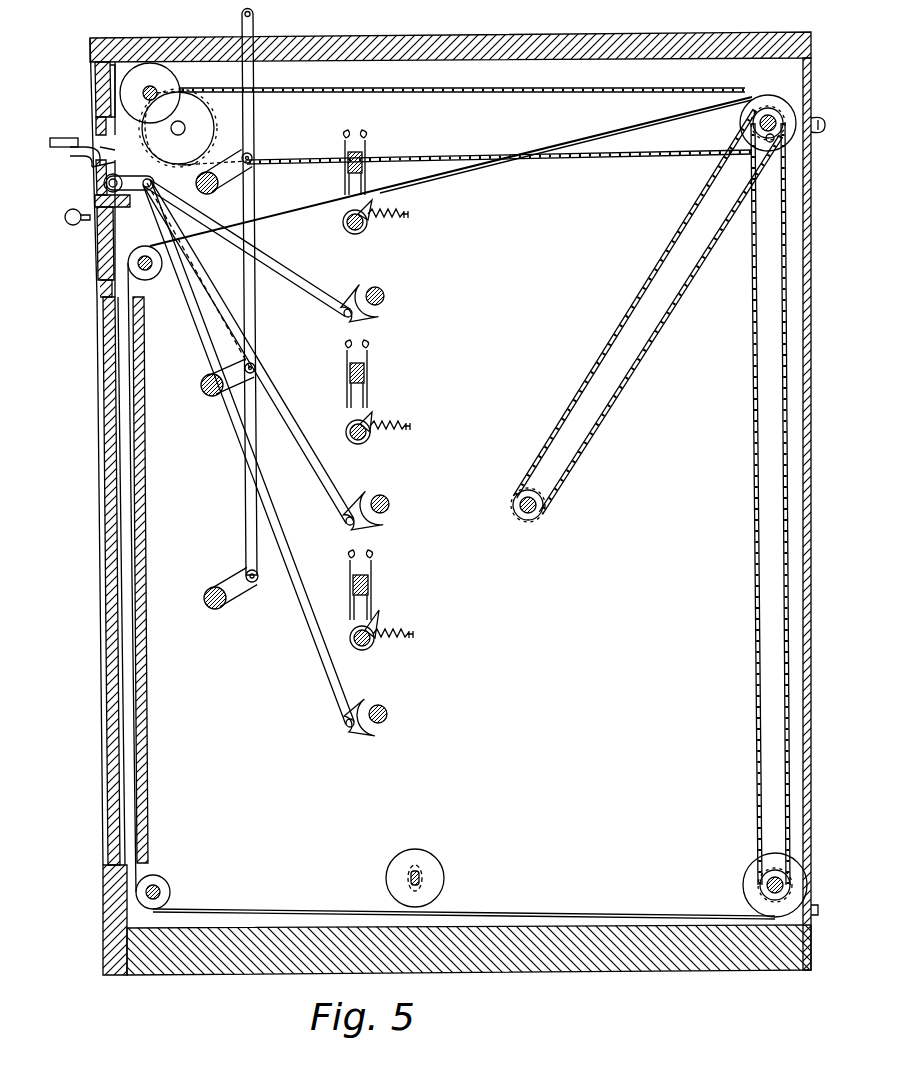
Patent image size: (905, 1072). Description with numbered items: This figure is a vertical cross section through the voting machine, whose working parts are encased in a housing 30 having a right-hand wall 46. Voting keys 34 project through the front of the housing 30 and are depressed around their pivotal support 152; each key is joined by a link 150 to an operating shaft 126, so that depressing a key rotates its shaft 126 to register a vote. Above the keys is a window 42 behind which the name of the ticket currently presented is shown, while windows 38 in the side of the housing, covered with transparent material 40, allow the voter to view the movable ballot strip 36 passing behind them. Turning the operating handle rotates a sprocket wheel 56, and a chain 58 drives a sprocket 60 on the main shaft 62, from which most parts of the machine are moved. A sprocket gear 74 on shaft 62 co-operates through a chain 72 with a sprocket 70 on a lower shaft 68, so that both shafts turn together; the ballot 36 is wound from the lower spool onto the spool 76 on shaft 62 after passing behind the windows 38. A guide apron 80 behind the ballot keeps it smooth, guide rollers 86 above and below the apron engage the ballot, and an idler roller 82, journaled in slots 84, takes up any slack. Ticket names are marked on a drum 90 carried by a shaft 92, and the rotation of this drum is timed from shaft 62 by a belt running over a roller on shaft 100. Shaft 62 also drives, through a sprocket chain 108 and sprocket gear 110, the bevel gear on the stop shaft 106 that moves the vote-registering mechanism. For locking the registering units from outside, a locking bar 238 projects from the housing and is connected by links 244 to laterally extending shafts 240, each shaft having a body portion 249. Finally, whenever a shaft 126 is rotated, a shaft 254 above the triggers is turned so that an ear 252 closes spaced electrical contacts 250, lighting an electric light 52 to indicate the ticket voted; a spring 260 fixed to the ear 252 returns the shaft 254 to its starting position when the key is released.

The housing 30 is at (655, 968).
The voting keys 34 is at (72, 158).
The ballot strip 36 is at (588, 910).
The windows 38 is at (104, 868).
The transparent material 40 is at (100, 698).
The window 42 is at (100, 110).
The right wall 46 is at (808, 372).
The electric light 52 is at (72, 226).
The sprocket wheel 56 is at (193, 103).
The chain 58 is at (514, 95).
The sprocket 60 is at (748, 133).
The shaft 62 is at (768, 118).
The shaft 68 is at (765, 889).
The sprocket 70 is at (780, 882).
The chain 72 is at (760, 720).
The sprocket gear 74 is at (772, 140).
The spool 76 is at (797, 865).
The guide apron 80 is at (147, 800).
The idler roller 82 is at (445, 878).
The slots 84 is at (415, 862).
The guide rollers 86 is at (150, 282).
The drum 90 is at (128, 82).
The shaft 92 is at (143, 94).
The shaft 100 is at (187, 128).
The stop shaft 106 is at (535, 512).
The sprocket chain 108 is at (672, 222).
The sprocket gear 110 is at (547, 503).
The shaft 126 is at (385, 297).
The links 150 is at (320, 305).
The pivotal support 152 is at (110, 184).
The locking bar 238 is at (255, 31).
The shaft 240 is at (218, 185).
The links 244 is at (250, 590).
The rod body 249 is at (228, 405).
The electrical contacts 250 is at (362, 165).
The ear 252 is at (372, 208).
The shaft 254 is at (365, 228).
The spring 260 is at (405, 216).